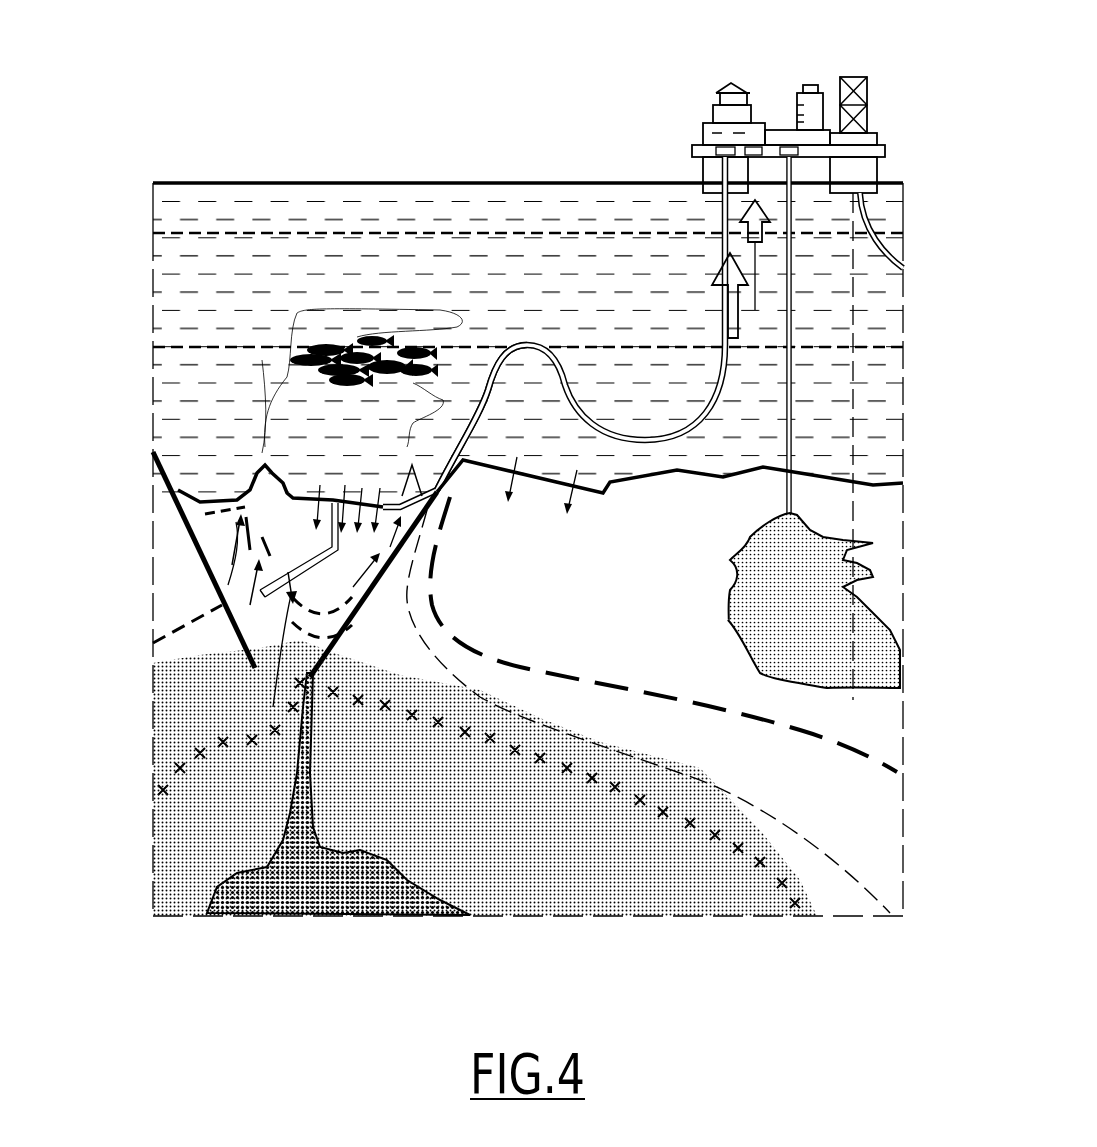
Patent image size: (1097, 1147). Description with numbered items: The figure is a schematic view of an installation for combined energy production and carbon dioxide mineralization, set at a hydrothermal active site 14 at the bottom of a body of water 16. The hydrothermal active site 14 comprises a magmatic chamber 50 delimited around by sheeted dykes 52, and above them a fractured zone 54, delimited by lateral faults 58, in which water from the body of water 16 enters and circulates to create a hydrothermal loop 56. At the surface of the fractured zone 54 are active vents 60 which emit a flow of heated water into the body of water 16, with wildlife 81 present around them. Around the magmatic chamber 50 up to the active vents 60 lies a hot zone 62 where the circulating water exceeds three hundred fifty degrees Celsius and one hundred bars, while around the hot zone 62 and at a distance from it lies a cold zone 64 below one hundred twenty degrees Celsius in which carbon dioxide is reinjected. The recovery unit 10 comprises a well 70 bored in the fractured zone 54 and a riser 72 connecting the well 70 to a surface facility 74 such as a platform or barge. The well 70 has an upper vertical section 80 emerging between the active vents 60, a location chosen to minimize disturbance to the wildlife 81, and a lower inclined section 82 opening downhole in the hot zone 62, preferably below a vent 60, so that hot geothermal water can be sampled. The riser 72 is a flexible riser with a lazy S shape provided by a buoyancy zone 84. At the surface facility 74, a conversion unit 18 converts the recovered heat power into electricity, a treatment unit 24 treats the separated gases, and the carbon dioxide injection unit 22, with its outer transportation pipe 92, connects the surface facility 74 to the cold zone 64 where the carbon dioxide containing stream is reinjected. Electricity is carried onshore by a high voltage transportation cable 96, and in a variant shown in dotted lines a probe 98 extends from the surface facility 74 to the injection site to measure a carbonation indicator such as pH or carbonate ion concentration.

The recovery unit 10 is at (488, 538).
The hydrothermal active site 14 is at (133, 901).
The body of water 16 is at (528, 350).
The conversion unit 18 is at (722, 151).
The carbon dioxide injection unit 22 is at (788, 151).
The treatment unit 24 is at (757, 151).
The magmatic chamber 50 is at (297, 900).
The sheeted dykes 52 is at (592, 900).
The fractured zone 54 is at (322, 580).
The hydrothermal loop 56 is at (378, 503).
The lateral faults 58 is at (228, 493).
The active vents 60 is at (262, 478).
The hot zone 62 is at (236, 522).
The cold zone 64 is at (868, 728).
The well 70 is at (273, 707).
The riser 72 is at (708, 211).
The surface facility 74 is at (898, 70).
The upper vertical section 80 is at (328, 545).
The wildlife 81 is at (330, 343).
The lower inclined section 82 is at (290, 547).
The buoyancy zone 84 is at (526, 345).
The outer transportation pipe 92 is at (797, 392).
The high voltage transportation cable 96 is at (872, 222).
The probe 98 is at (853, 282).